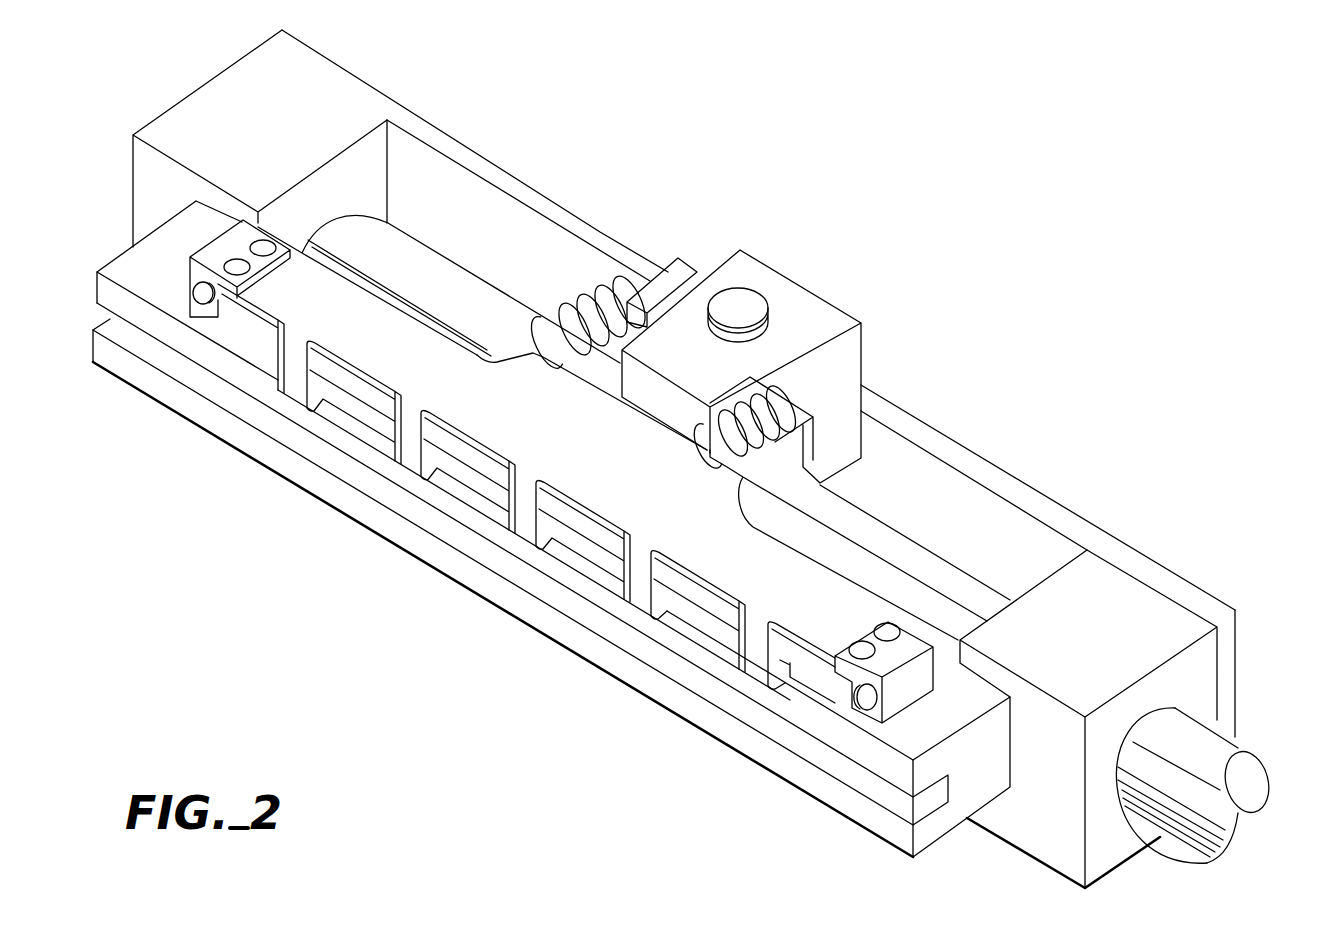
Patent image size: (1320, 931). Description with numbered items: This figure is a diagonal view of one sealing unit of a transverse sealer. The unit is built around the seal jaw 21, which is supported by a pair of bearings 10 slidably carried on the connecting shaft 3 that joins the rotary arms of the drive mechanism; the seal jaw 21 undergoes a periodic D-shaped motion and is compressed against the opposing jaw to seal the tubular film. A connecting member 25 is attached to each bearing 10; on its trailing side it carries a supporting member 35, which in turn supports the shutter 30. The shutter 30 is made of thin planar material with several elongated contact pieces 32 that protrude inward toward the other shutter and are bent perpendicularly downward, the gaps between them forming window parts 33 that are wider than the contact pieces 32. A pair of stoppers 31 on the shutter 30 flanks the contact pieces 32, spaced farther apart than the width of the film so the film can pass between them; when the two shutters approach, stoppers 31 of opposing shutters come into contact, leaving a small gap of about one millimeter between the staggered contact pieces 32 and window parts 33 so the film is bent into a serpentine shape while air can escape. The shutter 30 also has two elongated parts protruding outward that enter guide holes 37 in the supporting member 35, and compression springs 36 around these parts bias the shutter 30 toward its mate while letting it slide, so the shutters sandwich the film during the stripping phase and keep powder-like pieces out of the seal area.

The connecting shaft 3 is at (1233, 755).
The bearings 10 is at (263, 68).
The seal jaw 21 is at (742, 737).
The connecting member 25 is at (900, 423).
The shutter 30 is at (505, 373).
The stoppers 31 is at (192, 285).
The contact pieces 32 is at (642, 547).
The window parts 33 is at (483, 467).
The supporting member 35 is at (777, 287).
The compression springs 36 is at (588, 305).
The holes 37 is at (620, 312).